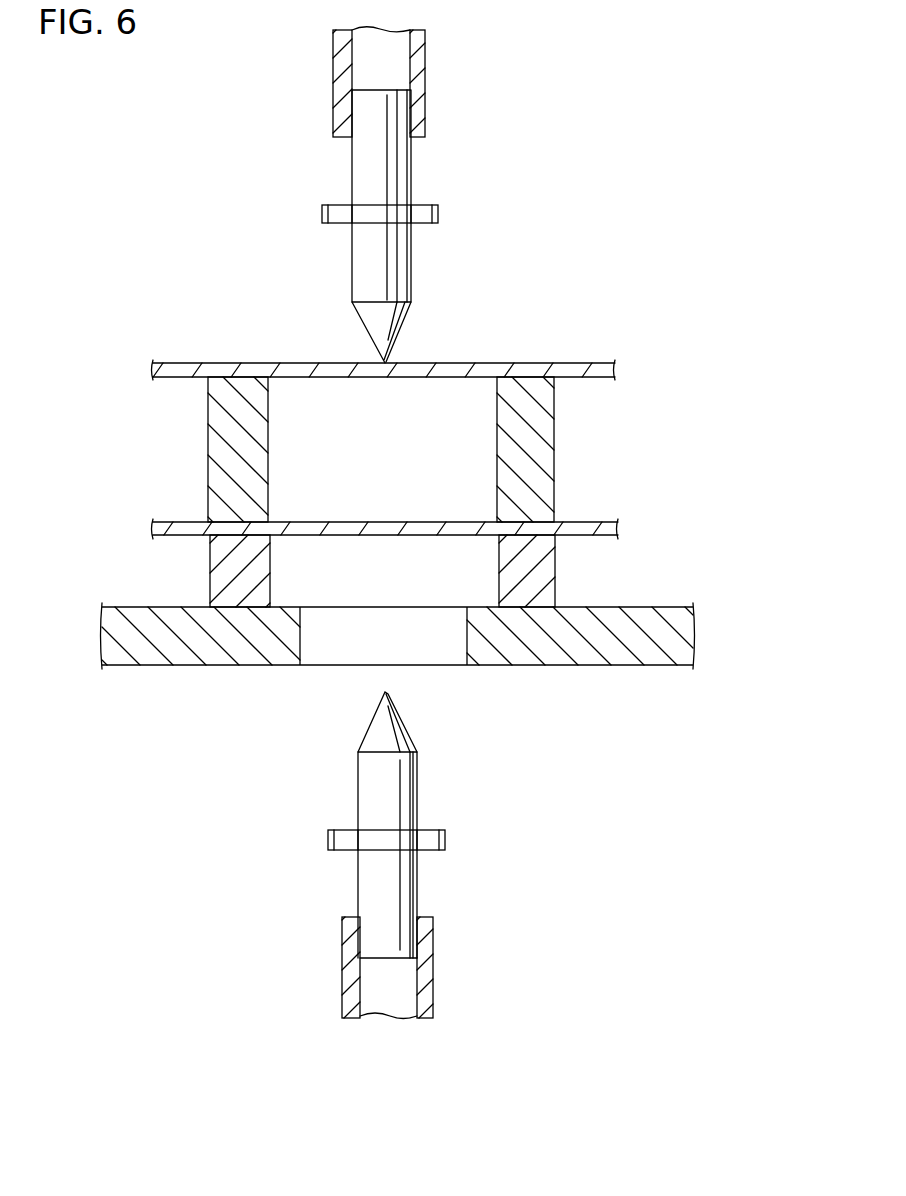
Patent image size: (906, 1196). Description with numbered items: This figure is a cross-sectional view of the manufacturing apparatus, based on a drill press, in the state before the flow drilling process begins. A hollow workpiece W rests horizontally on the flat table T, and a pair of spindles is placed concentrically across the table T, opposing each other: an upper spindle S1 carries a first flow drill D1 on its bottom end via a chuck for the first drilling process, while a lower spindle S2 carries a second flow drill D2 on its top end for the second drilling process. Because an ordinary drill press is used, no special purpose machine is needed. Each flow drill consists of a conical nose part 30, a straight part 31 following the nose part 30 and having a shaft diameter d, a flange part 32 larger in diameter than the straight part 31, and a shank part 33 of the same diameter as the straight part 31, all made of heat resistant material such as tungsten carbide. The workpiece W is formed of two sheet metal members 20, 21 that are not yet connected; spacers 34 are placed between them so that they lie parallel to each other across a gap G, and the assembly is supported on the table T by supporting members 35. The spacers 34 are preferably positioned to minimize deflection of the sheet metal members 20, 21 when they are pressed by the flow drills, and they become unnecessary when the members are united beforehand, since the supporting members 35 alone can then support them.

The upper spindle S1 is at (428, 45).
The first flow drill D1 is at (443, 178).
The shank part 33 is at (367, 165).
The flange part 32 is at (440, 213).
The shaft diameter d is at (308, 249).
The straight part 31 is at (360, 279).
The conical nose part 30 is at (402, 323).
The hollow workpiece W is at (185, 358).
The sheet metal member 20 is at (582, 363).
The spacer 34 is at (256, 458).
The gap G is at (642, 377).
The sheet metal member 21 is at (598, 521).
The supporting member 35 is at (255, 574).
The flat table T is at (640, 655).
The lower spindle S2 is at (436, 990).
The second flow drill D2 is at (483, 860).